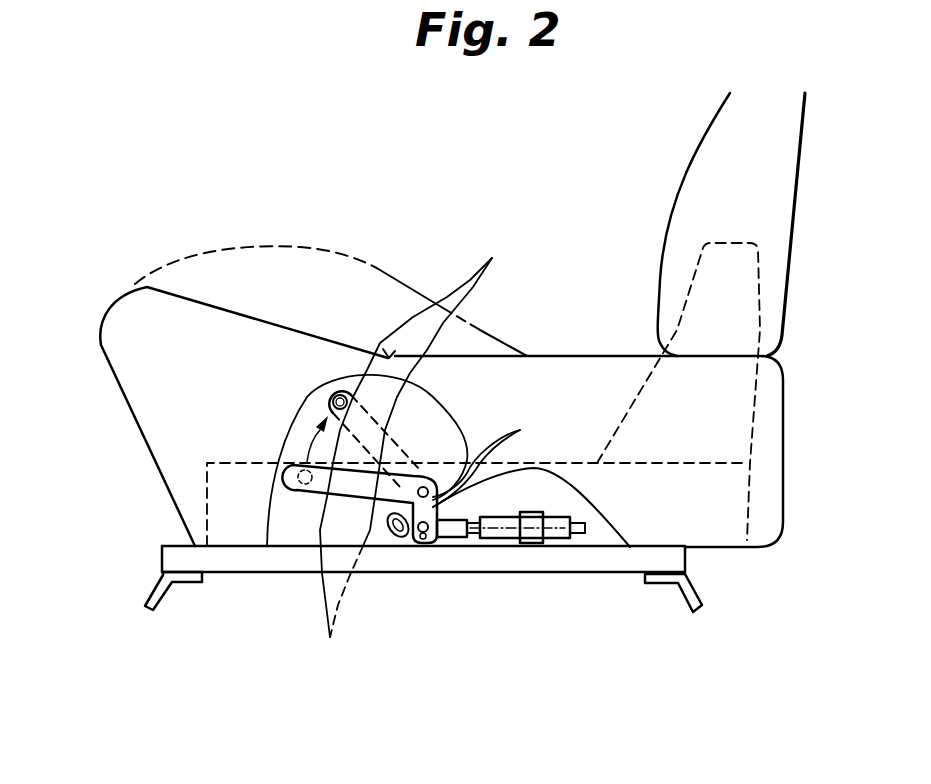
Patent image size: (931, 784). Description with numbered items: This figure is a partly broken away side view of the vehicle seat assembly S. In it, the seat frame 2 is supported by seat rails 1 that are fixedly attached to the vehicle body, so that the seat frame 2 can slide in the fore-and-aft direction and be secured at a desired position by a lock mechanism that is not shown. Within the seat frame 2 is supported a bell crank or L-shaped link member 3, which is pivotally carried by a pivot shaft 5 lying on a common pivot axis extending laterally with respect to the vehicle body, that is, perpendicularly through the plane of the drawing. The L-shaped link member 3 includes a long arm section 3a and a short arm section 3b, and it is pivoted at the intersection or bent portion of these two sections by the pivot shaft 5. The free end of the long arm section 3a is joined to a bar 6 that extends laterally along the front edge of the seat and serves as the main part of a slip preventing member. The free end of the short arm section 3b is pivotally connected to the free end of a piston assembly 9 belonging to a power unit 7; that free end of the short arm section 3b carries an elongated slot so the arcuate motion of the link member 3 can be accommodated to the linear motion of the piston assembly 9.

The vehicle seat assembly S is at (611, 327).
The seat rails 1 is at (232, 572).
The seat frame 2 is at (213, 493).
The L-shaped link member 3 is at (367, 496).
The long arm section 3a is at (470, 286).
The short arm section 3b is at (502, 447).
The pivot shaft 5 is at (428, 490).
The bar 6 is at (338, 395).
The power unit 7 is at (505, 540).
The piston assembly 9 is at (452, 532).